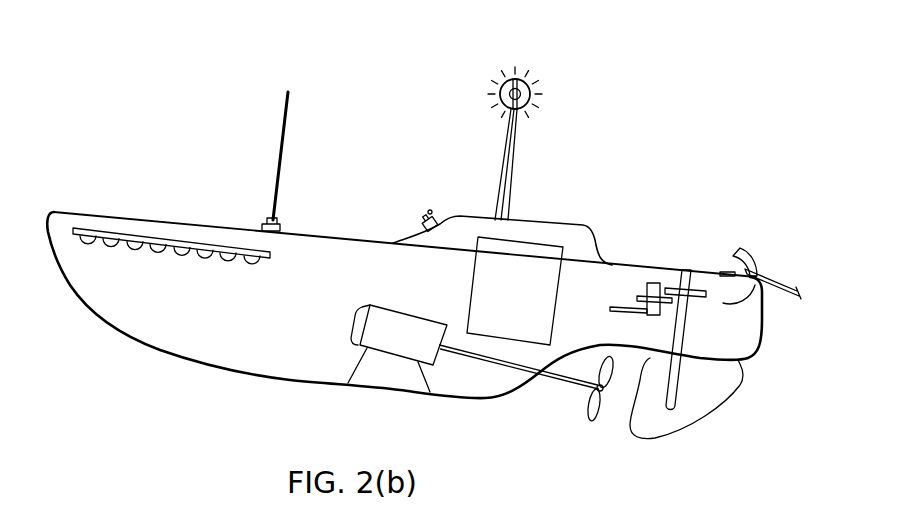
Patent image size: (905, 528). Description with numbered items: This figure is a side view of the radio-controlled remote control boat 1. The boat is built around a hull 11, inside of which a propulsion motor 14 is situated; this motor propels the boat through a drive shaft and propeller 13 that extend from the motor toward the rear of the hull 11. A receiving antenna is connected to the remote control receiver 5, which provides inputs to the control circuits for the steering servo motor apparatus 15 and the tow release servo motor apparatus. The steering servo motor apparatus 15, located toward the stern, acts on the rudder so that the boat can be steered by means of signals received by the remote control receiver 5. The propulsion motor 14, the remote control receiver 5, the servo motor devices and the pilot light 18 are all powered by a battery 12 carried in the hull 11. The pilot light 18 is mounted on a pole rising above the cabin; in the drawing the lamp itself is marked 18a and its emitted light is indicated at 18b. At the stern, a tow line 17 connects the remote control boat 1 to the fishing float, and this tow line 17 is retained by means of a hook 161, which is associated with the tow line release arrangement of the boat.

The remote control boat 1 is at (323, 233).
The remote control receiver 5 is at (152, 240).
The hull 11 is at (190, 357).
The battery 12 is at (540, 246).
The drive shaft and propeller 13 is at (547, 377).
The propulsion motor 14 is at (393, 312).
The steering servo motor apparatus 15 is at (657, 283).
The hook 161 is at (738, 250).
The tow line 17 is at (778, 278).
The pilot light 18 is at (513, 138).
The lamp 18a is at (502, 97).
The light rays 18b is at (530, 83).